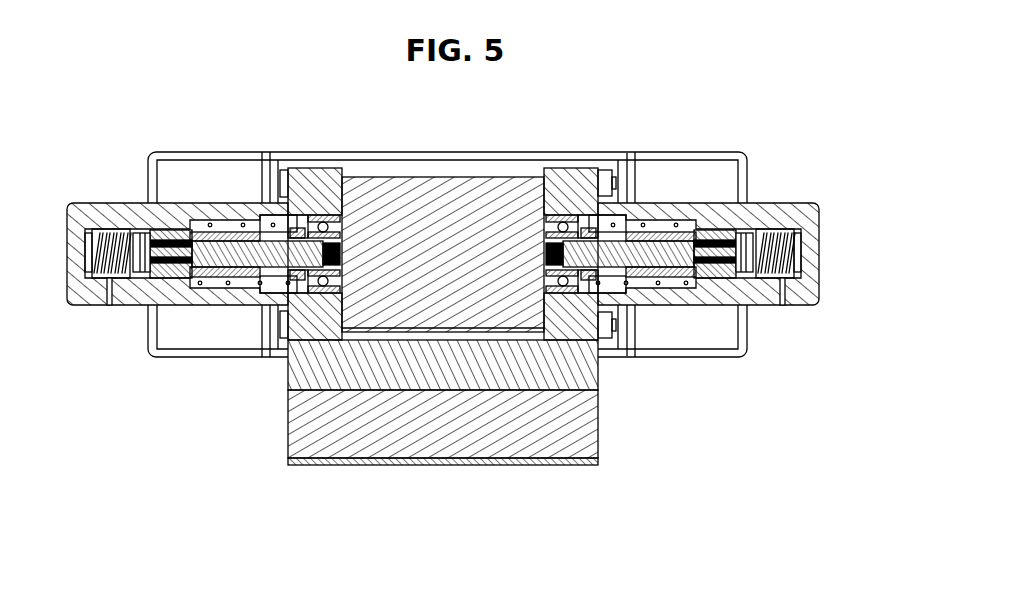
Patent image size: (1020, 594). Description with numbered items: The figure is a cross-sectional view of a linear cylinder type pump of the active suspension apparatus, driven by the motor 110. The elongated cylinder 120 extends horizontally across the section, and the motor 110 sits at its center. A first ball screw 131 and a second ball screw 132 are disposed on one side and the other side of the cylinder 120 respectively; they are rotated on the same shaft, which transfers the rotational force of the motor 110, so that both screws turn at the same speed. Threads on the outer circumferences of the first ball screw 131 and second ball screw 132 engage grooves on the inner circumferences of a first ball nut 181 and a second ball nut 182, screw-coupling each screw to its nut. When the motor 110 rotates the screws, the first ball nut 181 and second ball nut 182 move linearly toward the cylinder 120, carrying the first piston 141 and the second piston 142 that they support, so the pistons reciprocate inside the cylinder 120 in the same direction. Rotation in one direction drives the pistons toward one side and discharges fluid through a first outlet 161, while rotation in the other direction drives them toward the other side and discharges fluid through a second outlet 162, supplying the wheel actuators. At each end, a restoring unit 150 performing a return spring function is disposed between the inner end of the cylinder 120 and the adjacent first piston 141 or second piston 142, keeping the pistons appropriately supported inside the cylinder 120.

The motor 110 is at (445, 205).
The cylinder 120 is at (97, 208).
The first ball screw 131 is at (263, 228).
The second ball screw 132 is at (652, 237).
The first piston 141 is at (203, 233).
The second piston 142 is at (678, 235).
The restoring unit 150 is at (100, 307).
The first outlet 161 is at (108, 307).
The second outlet 162 is at (785, 307).
The first ball nut 181 is at (293, 232).
The second ball nut 182 is at (597, 228).